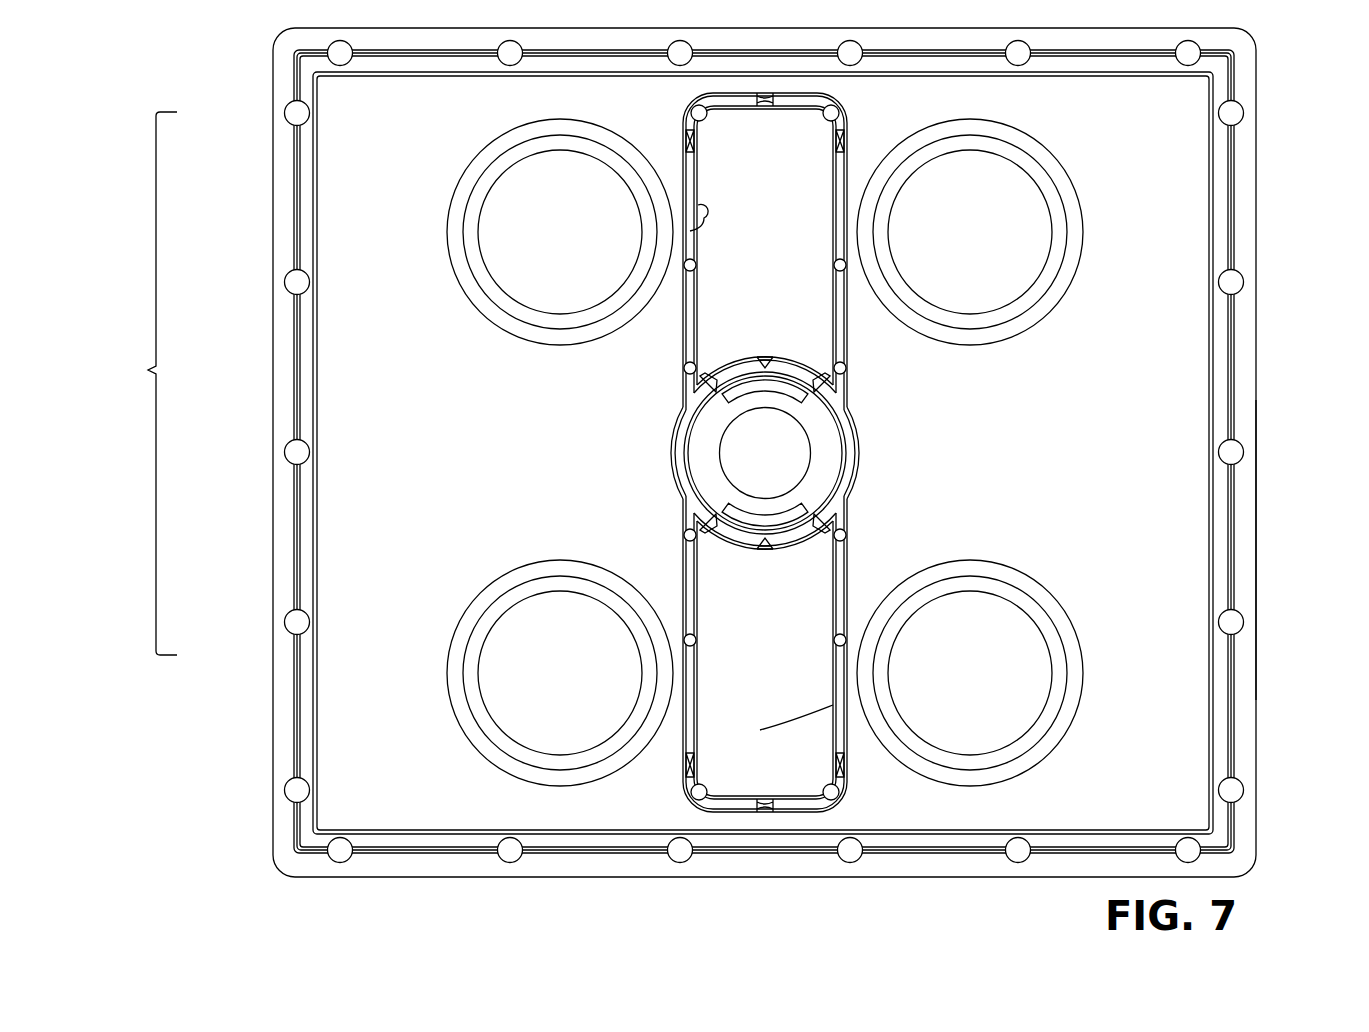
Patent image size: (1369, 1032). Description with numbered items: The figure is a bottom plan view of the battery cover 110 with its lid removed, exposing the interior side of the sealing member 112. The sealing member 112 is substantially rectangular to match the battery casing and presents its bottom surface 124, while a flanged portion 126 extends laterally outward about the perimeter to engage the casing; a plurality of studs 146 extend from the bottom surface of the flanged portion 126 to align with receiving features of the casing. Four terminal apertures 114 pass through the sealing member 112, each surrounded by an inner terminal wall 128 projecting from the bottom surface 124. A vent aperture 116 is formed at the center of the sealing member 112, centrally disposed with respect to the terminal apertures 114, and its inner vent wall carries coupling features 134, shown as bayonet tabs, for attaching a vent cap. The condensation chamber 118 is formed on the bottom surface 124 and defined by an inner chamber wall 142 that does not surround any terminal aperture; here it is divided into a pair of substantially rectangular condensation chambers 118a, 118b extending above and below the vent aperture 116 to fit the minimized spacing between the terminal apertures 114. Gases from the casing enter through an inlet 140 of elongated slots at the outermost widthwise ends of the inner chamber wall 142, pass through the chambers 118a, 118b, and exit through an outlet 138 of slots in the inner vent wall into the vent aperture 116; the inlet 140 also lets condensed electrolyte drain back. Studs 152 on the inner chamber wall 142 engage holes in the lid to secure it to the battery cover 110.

The battery cover 110 is at (1294, 58).
The sealing member 112 is at (1180, 232).
The terminal apertures 114 is at (1040, 652).
The vent aperture 116 is at (690, 452).
The condensation chamber 118 is at (142, 383).
The first condensation chamber 118a is at (760, 730).
The second condensation chamber 118b is at (690, 231).
The bottom surface 124 is at (1172, 375).
The flanged portion 126 is at (1247, 550).
The inner terminal wall 128 is at (455, 236).
The coupling feature 134 is at (785, 385).
The outlet 138 is at (768, 357).
The inlet 140 is at (684, 766).
The inner chamber wall 142 is at (690, 349).
The studs 146 is at (292, 795).
The studs 152 is at (842, 368).